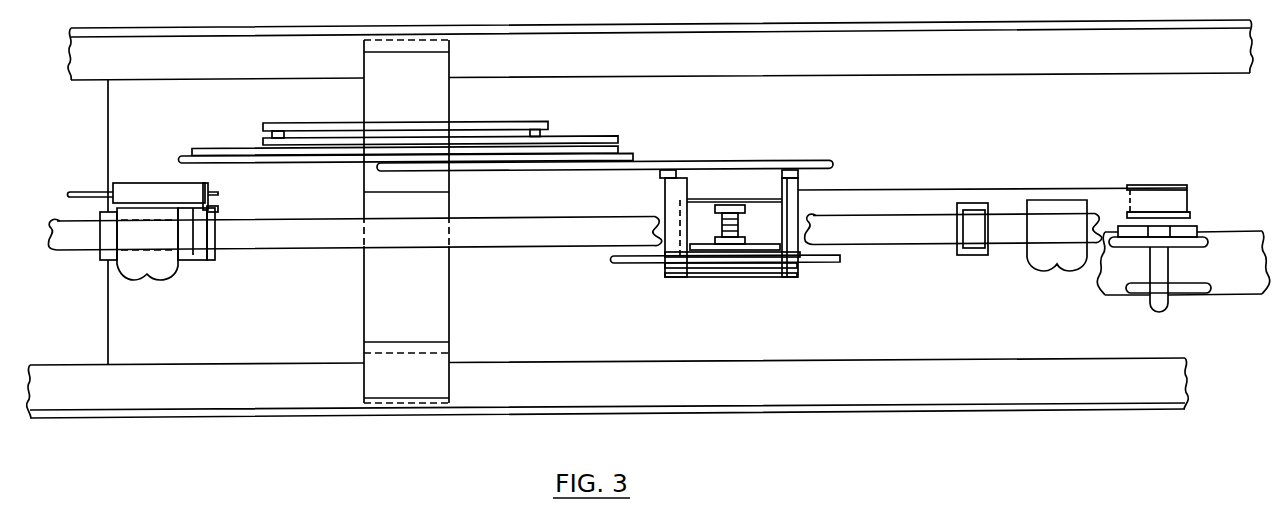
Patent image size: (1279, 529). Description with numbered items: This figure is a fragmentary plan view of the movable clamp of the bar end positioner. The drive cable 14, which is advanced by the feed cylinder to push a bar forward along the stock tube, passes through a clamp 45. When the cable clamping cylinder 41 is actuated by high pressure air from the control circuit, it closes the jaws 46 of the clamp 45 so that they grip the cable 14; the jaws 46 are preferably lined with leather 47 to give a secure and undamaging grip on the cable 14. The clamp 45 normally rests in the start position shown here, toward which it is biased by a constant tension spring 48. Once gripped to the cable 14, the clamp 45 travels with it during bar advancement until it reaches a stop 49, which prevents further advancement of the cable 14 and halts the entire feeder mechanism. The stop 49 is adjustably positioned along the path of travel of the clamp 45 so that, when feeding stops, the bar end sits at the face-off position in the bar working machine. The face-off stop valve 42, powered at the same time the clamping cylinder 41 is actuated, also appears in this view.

The drive cable 14 is at (625, 260).
The cable clamping cylinder 41 is at (724, 183).
The face-off stop valve 42 is at (178, 190).
The clamp 45 is at (643, 196).
The jaws 46 is at (793, 273).
The leather 47 is at (703, 265).
The constant tension spring 48 is at (1175, 197).
The stop 49 is at (218, 205).